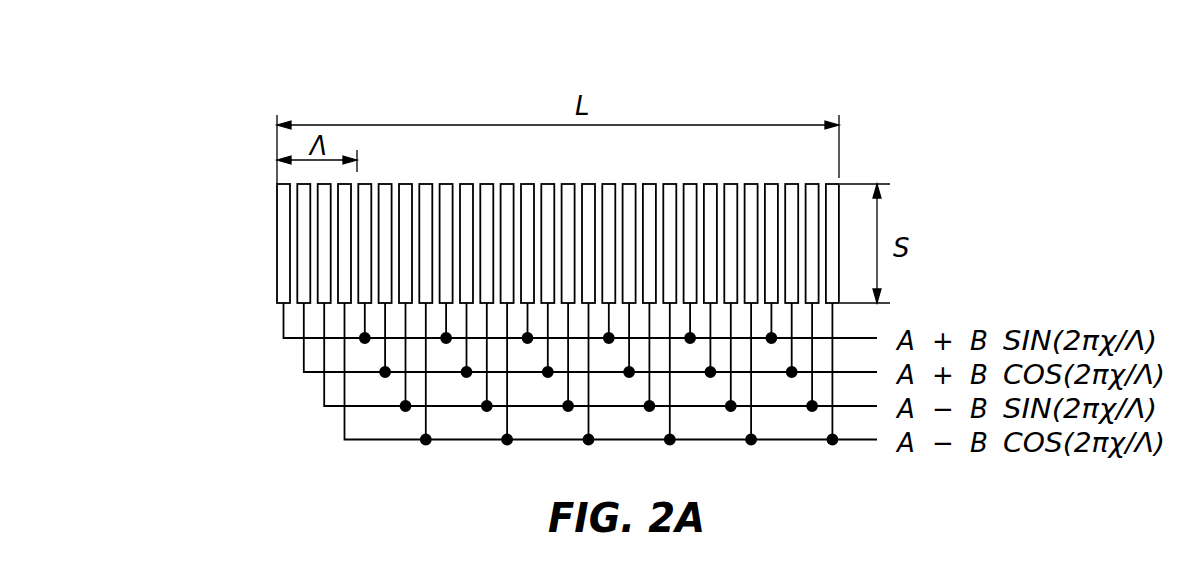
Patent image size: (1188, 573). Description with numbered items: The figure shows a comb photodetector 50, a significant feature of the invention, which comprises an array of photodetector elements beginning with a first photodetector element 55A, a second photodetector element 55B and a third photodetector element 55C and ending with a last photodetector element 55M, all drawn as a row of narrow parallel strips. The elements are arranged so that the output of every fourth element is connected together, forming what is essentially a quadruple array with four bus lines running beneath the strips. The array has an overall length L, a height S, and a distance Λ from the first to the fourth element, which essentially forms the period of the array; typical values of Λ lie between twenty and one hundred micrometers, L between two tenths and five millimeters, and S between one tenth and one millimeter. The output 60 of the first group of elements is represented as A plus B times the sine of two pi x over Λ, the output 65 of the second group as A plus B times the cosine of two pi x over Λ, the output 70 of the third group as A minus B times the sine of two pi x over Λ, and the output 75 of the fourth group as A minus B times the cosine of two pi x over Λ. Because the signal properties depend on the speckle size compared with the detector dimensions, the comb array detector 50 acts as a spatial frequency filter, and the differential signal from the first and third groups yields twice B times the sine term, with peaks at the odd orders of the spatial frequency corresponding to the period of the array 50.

The comb photodetector 50 is at (851, 153).
The photodetector element 55A is at (276, 287).
The photodetector element 55B is at (300, 303).
The photodetector element 55C is at (320, 305).
The photodetector element 55M is at (834, 196).
The output of the first group of elements 60 is at (581, 323).
The output of the second group of elements 65 is at (590, 340).
The output of the third group of elements 70 is at (600, 357).
The output of the fourth group of elements 75 is at (611, 374).